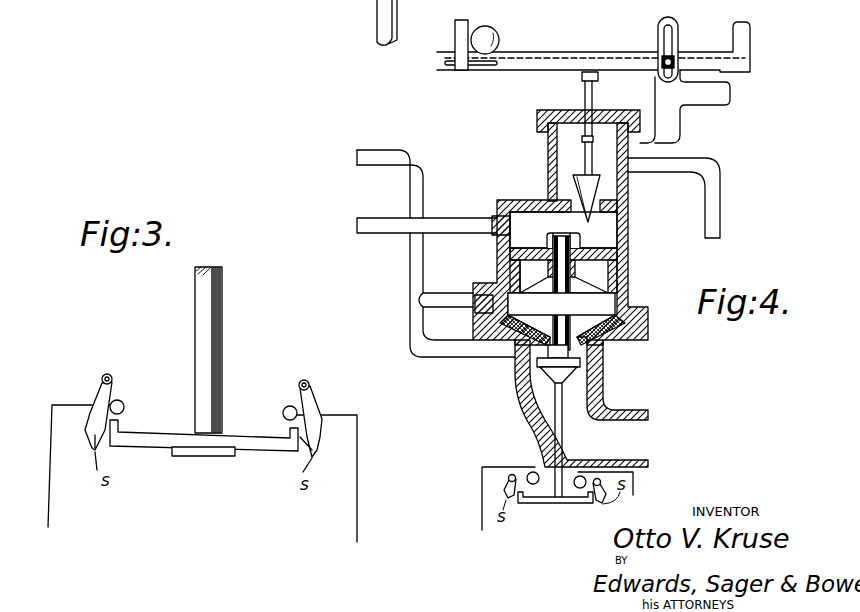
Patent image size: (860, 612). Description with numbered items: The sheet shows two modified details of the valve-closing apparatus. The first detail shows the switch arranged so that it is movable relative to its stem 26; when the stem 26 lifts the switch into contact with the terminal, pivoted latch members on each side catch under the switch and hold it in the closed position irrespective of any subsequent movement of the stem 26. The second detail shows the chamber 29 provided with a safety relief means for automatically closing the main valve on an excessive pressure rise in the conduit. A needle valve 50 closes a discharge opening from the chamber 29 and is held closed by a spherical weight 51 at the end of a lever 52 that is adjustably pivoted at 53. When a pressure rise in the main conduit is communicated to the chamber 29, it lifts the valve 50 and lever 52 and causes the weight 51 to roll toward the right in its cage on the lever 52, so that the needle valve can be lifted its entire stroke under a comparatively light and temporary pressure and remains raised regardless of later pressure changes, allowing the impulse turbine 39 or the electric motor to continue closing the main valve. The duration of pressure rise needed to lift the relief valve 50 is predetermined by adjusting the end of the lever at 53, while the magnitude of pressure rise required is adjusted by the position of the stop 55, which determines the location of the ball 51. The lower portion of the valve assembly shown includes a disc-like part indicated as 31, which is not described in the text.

In FIG. 3, the stem 26 is at (205, 358).
In FIG. 4, the stem 26 is at (562, 432).
In FIG. 4, the chamber 29 is at (592, 227).
In FIG. 4, the valve disc 31 is at (587, 312).
In FIG. 4, the impulse turbine 39 is at (347, 0).
In FIG. 4, the needle valve 50 is at (587, 160).
In FIG. 4, the weight 51 is at (492, 41).
In FIG. 4, the lever 52 is at (553, 63).
In FIG. 4, the pivot 53 is at (663, 59).
In FIG. 4, the stop 55 is at (455, 33).